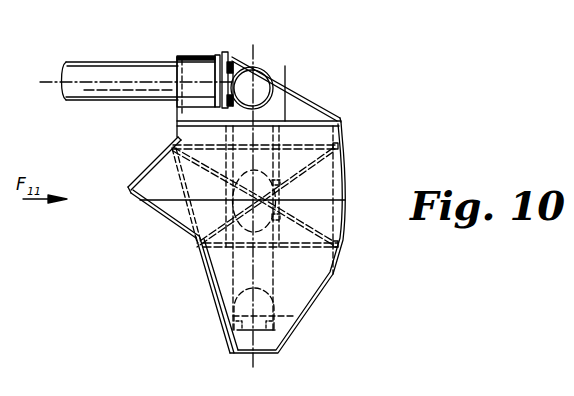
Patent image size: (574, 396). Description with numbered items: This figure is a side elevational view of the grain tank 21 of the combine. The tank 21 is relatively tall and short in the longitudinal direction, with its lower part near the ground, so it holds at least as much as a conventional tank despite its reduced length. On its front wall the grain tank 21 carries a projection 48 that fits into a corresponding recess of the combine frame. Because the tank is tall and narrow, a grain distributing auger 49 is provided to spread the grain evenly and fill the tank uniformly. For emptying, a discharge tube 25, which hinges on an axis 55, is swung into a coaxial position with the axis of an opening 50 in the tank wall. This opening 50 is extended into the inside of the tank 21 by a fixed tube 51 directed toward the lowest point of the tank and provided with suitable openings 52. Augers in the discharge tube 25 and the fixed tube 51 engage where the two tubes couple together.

The discharge tube 25 is at (118, 65).
The grain distributing auger 49 is at (201, 68).
The axis 55 is at (228, 62).
The opening 50 is at (262, 82).
The fixed tube 51 is at (275, 135).
The grain tank 21 is at (332, 176).
The projection 48 is at (140, 200).
The openings 52 is at (248, 302).